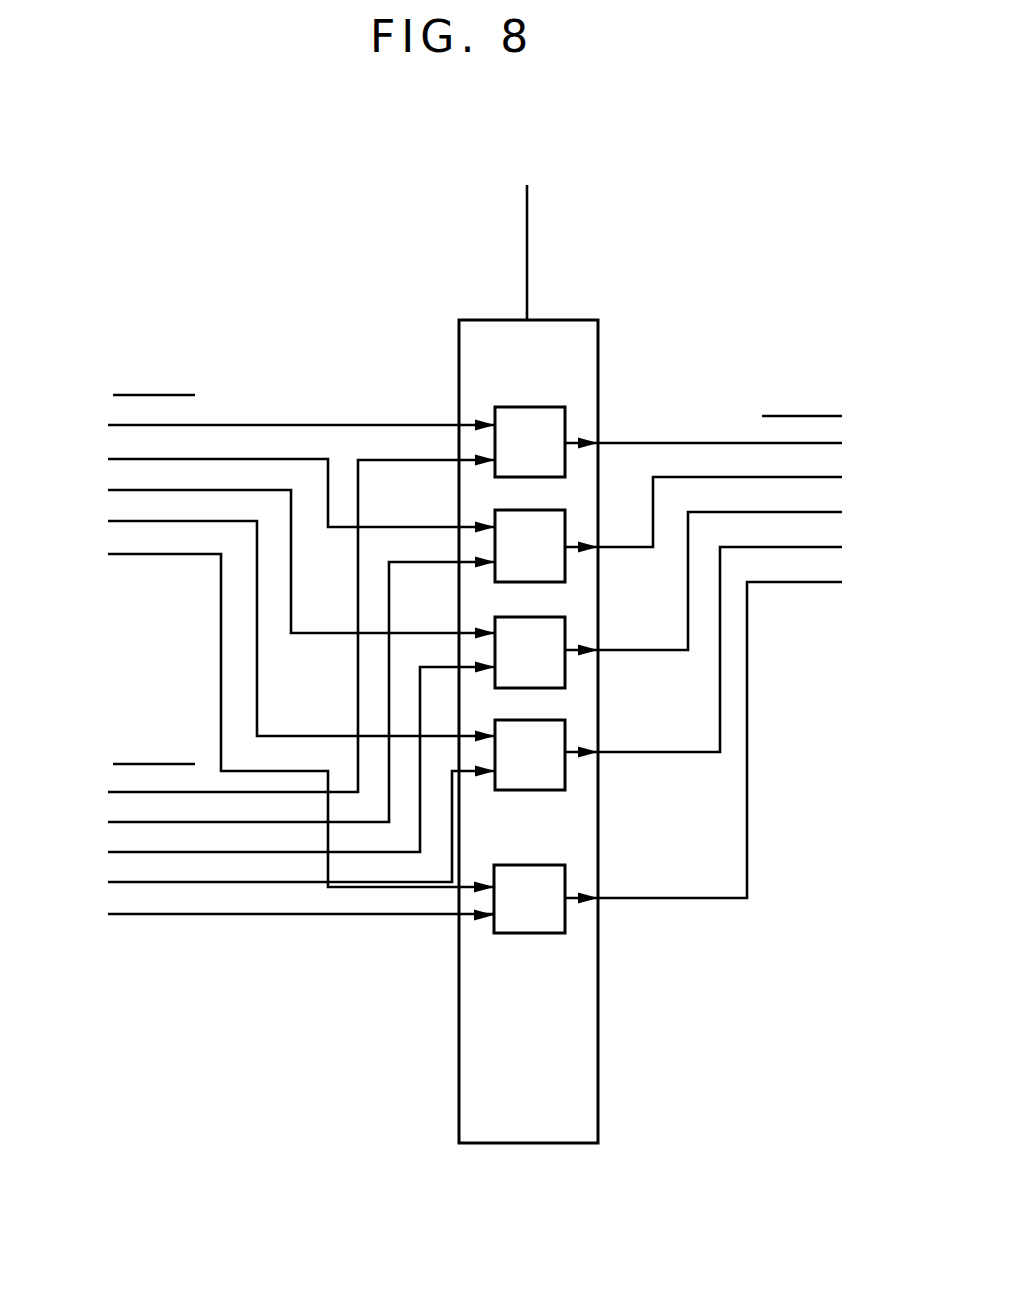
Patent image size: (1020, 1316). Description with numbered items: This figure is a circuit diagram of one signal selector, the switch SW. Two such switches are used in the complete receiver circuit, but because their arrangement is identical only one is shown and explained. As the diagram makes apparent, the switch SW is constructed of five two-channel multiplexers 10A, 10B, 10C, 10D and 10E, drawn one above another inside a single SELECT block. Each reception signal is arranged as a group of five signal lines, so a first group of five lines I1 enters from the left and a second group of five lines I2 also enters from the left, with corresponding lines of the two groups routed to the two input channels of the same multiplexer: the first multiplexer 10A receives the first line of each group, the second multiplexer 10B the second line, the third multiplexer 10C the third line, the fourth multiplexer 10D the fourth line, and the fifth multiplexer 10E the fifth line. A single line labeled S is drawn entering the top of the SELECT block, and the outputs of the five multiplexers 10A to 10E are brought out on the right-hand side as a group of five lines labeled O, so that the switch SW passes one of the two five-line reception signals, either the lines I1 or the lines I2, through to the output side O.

The 2-channel multiplexer 10A is at (530, 407).
The 2-channel multiplexer 10B is at (538, 494).
The 2-channel multiplexer 10C is at (530, 617).
The 2-channel multiplexer 10D is at (530, 720).
The 2-channel multiplexer 10E is at (530, 865).
The switch SW is at (590, 363).
The select signal input S is at (556, 172).
The signal lines I1 is at (105, 395).
The signal lines I2 is at (105, 764).
The output signal group O is at (848, 416).